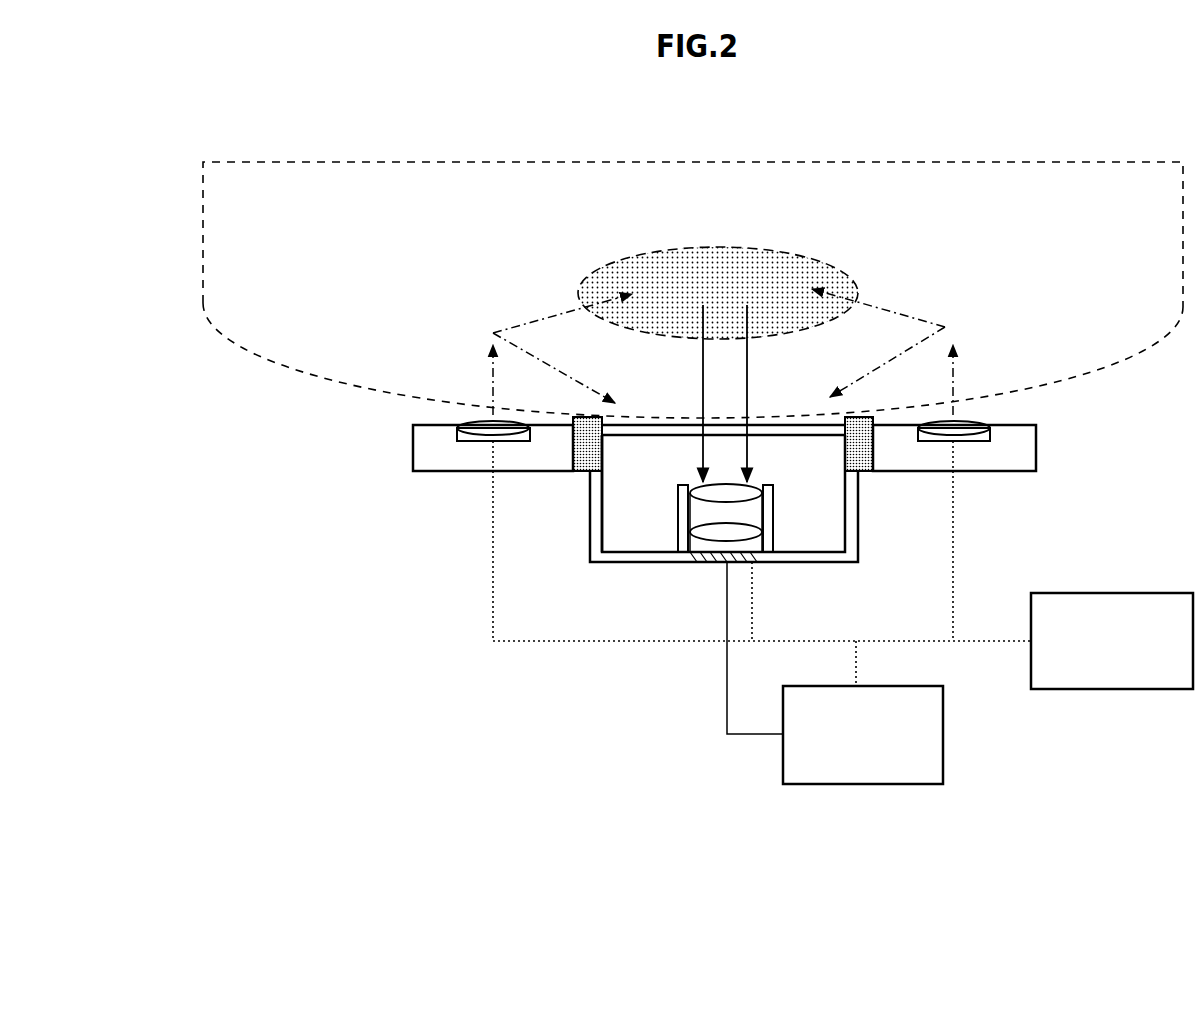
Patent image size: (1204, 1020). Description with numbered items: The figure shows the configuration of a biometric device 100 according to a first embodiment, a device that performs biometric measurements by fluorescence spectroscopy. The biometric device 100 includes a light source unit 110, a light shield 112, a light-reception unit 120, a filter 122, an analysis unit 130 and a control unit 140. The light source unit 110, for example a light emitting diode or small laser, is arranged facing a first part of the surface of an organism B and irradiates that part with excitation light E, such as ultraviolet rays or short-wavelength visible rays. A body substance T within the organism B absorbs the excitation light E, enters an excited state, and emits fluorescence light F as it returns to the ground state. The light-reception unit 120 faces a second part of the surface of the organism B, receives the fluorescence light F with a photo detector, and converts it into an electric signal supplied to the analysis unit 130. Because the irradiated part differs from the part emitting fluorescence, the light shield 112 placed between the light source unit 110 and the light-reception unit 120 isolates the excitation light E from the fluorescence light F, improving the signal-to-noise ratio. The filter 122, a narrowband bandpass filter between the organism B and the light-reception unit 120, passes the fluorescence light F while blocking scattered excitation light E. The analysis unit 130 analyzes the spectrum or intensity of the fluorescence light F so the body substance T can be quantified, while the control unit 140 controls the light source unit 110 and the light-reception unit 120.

The biometric device 100 is at (600, 740).
The light source unit 110 is at (467, 473).
The light shield 112 is at (585, 473).
The light-reception unit 120 is at (690, 587).
The filter 122 is at (652, 437).
The analysis unit 130 is at (845, 786).
The control unit 140 is at (1118, 690).
The organism B is at (1040, 162).
The body substance T is at (835, 268).
The excitation light E is at (493, 345).
The fluorescence light F is at (703, 390).